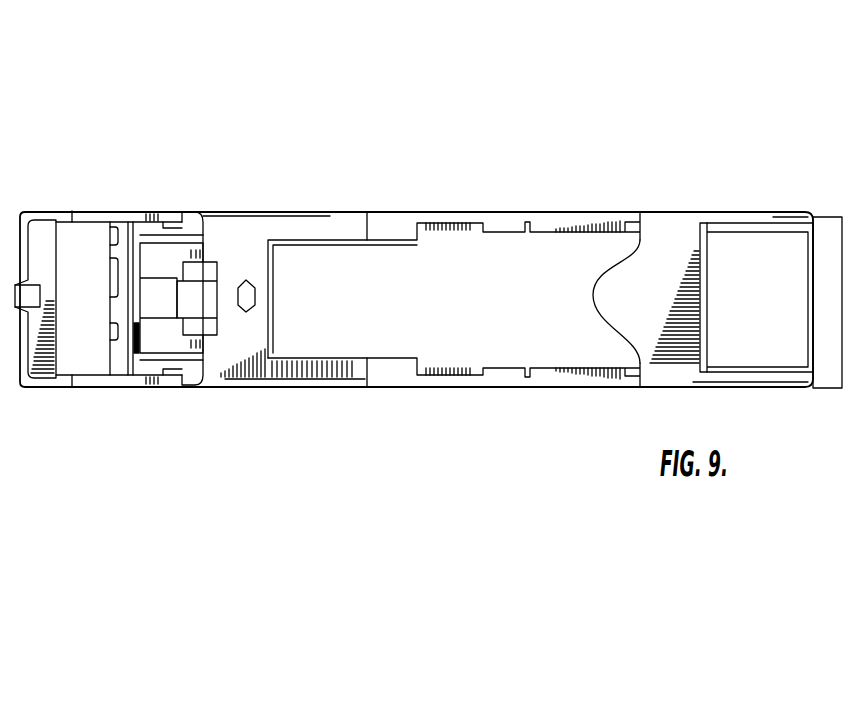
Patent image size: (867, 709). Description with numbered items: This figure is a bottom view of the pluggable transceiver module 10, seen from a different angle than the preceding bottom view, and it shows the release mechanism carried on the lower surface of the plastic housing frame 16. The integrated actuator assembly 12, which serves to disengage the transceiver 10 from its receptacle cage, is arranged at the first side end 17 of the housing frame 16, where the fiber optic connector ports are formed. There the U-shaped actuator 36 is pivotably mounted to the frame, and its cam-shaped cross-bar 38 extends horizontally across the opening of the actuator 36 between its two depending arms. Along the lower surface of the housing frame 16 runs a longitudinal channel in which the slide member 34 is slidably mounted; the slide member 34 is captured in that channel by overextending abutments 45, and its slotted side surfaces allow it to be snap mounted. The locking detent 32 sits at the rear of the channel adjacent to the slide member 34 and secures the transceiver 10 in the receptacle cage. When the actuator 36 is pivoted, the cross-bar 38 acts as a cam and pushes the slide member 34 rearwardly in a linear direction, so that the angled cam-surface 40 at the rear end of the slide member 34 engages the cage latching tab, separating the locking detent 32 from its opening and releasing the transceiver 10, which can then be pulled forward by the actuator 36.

The pluggable transceiver module 10 is at (477, 452).
The actuator assembly 12 is at (138, 164).
The housing frame 16 is at (346, 230).
The first side end 17 is at (190, 186).
The locking detent 32 is at (245, 280).
The slide member 34 is at (168, 300).
The actuator 36 is at (90, 213).
The cross-bar 38 is at (110, 318).
The angled cam-surface 40 is at (203, 292).
The overextending abutments 45 is at (137, 325).